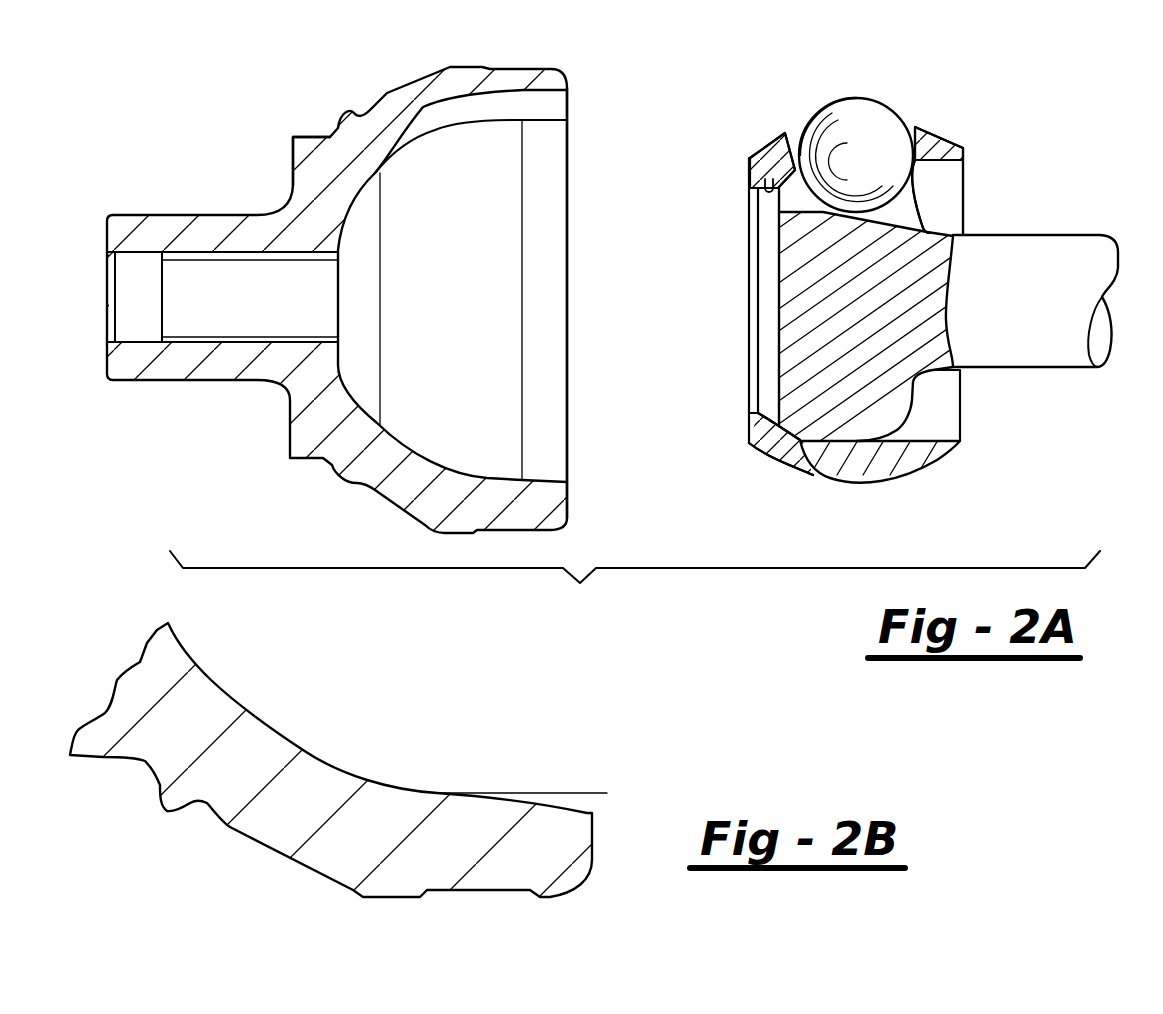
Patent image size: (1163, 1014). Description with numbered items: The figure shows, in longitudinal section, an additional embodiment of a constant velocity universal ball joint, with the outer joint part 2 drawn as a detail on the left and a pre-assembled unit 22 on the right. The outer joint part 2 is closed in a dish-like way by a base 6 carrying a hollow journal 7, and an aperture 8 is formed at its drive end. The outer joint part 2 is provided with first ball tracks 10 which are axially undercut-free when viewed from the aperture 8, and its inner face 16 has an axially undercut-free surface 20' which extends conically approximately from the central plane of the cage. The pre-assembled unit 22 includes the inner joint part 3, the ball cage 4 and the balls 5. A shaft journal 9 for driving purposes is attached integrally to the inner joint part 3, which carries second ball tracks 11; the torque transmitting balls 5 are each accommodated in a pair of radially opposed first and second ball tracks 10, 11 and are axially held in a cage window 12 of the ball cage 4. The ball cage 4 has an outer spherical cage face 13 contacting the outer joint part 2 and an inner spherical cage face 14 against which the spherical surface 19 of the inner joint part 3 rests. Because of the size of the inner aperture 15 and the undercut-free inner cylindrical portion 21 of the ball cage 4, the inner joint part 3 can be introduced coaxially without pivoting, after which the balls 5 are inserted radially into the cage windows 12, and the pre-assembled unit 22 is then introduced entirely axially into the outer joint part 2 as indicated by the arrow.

In FIG. 2A, the outer joint part 2 is at (415, 93).
In FIG. 2A, the inner joint part 3 is at (900, 258).
In FIG. 2A, the ball cage 4 is at (950, 148).
In FIG. 2A, the balls 5 is at (887, 130).
In FIG. 2A, the base 6 is at (318, 167).
In FIG. 2A, the hollow journal 7 is at (202, 233).
In FIG. 2A, the aperture 8 is at (594, 148).
In FIG. 2A, the shaft journal 9 is at (1063, 258).
In FIG. 2A, the first ball tracks 10 is at (512, 104).
In FIG. 2A, the second ball tracks 11 is at (905, 218).
In FIG. 2A, the cage window 12 is at (903, 143).
In FIG. 2A, the outer spherical cage face 13 is at (751, 160).
In FIG. 2A, the inner spherical cage face 14 is at (768, 180).
In FIG. 2A, the inner aperture 15 is at (965, 392).
In FIG. 2B, the spherical guiding face 16 is at (347, 770).
In FIG. 2A, the spherical surface 19 is at (814, 476).
In FIG. 2B, the axially undercut-free surface 20' is at (522, 746).
In FIG. 2A, the inner cylindrical portion 21 is at (932, 440).
In FIG. 2A, the pre-assembled unit 22 is at (812, 88).